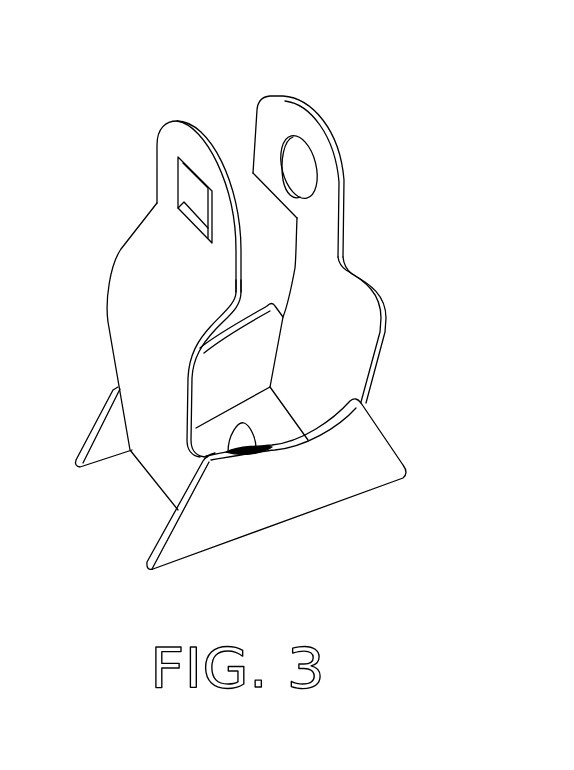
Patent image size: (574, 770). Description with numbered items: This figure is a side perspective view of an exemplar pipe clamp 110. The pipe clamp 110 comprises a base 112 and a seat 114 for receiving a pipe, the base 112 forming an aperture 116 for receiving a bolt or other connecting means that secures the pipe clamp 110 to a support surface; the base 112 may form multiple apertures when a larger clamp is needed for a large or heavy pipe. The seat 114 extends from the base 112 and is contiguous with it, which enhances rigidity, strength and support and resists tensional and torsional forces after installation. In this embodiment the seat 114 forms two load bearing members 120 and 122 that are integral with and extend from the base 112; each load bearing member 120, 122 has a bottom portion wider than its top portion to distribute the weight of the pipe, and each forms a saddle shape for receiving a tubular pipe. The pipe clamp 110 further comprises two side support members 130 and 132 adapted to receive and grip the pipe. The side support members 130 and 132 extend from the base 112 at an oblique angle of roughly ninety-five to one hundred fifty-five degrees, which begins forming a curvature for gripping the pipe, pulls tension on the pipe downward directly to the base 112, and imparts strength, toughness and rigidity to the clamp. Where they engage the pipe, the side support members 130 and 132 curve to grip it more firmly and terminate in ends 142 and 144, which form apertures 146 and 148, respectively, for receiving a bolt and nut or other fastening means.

The pipe clamp 110 is at (247, 318).
The base 112 is at (207, 433).
The seat 114 is at (83, 415).
The aperture 116 is at (217, 457).
The load bearing member 120 is at (290, 447).
The load bearing member 122 is at (272, 305).
The side support member 130 is at (154, 283).
The side support member 132 is at (365, 206).
The end 142 is at (172, 174).
The end 144 is at (339, 133).
The aperture 146 is at (207, 195).
The aperture 148 is at (310, 160).